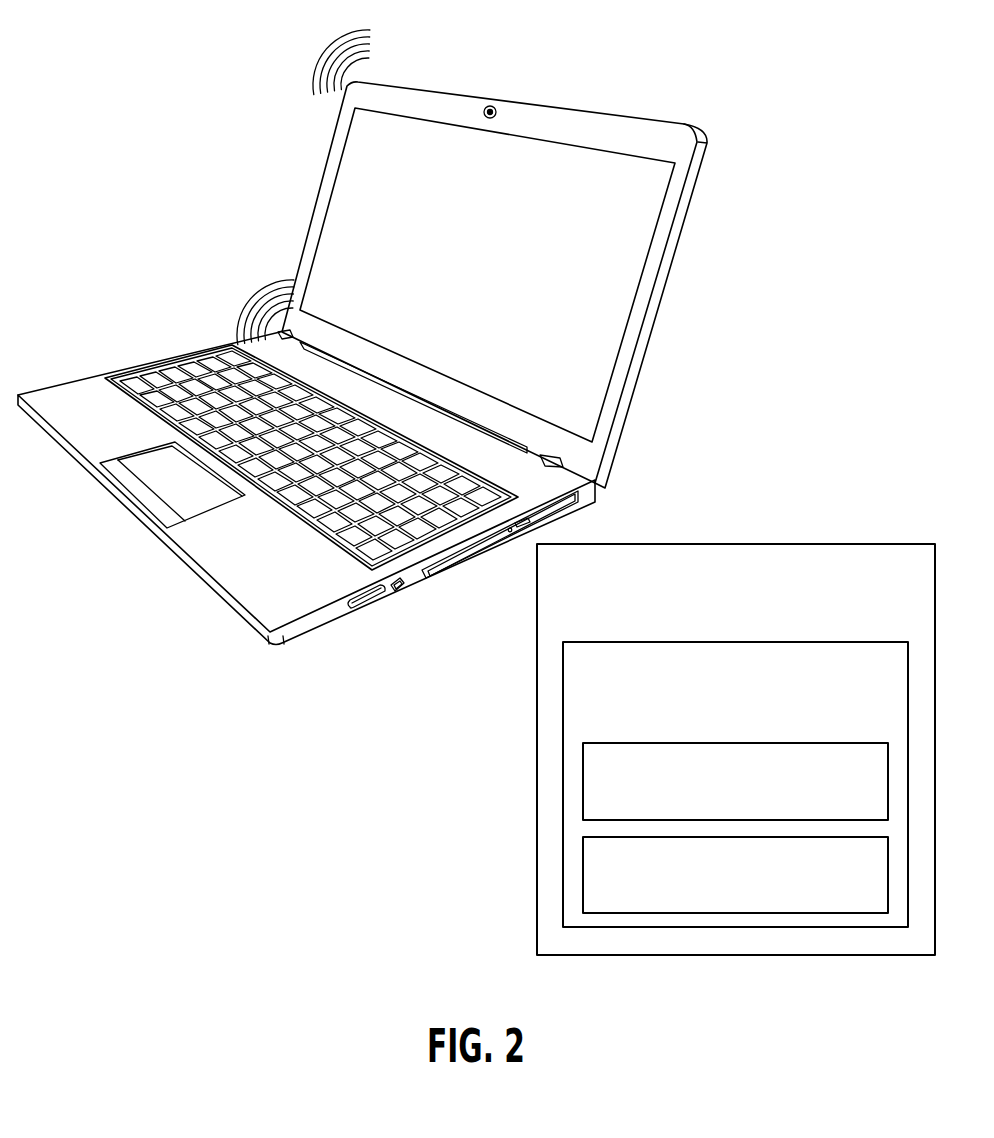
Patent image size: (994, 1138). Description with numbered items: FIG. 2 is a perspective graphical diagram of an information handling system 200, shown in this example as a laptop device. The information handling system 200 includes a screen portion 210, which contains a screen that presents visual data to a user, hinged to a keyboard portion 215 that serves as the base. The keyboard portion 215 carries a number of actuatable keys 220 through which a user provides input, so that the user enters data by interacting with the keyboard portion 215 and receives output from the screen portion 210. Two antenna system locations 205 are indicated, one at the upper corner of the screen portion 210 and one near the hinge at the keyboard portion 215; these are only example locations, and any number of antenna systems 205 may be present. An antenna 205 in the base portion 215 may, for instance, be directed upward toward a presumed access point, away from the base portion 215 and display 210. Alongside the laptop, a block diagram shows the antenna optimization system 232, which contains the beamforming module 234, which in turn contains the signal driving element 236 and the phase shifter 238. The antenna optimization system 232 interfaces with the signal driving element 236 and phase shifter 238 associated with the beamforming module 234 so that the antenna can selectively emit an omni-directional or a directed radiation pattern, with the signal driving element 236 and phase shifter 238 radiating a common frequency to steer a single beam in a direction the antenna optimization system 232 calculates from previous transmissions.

The information handling system 200 is at (140, 100).
The antenna system location 205 is at (357, 91).
The screen portion 210 is at (349, 214).
The keyboard portion 215 is at (164, 333).
The actuatable keys 220 is at (122, 380).
The antenna optimization system 232 is at (716, 616).
The beamforming module 234 is at (716, 727).
The signal driving element 236 is at (715, 809).
The phase shifter 238 is at (715, 903).